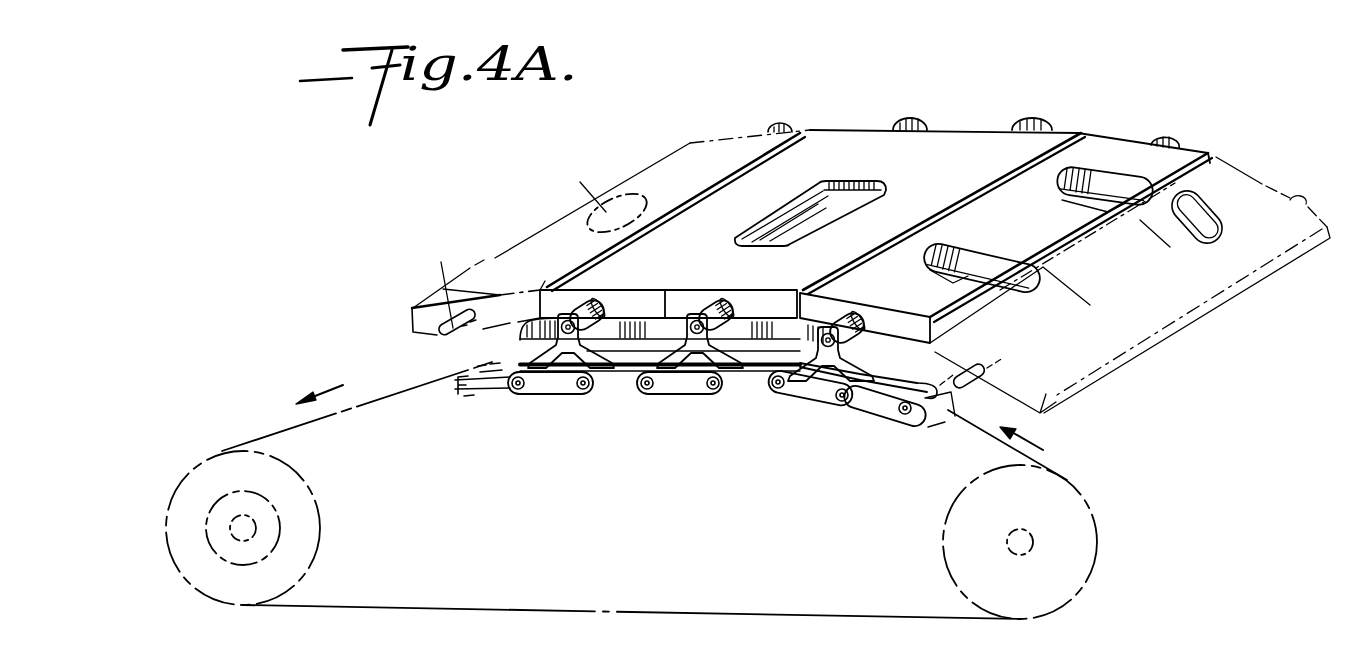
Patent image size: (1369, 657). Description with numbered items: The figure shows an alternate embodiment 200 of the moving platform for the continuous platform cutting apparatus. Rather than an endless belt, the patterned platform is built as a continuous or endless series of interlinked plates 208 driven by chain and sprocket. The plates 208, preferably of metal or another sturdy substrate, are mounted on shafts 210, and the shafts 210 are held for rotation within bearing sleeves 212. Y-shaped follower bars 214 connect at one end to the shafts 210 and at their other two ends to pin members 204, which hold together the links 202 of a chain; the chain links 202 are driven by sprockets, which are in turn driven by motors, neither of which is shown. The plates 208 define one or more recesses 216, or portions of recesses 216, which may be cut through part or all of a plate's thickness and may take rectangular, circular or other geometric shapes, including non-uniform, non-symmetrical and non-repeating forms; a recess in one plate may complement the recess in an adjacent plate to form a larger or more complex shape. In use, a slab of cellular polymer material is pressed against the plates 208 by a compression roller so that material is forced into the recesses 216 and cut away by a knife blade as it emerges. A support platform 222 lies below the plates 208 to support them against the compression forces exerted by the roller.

The alternate embodiment 200 is at (1128, 116).
The plates 208 is at (960, 150).
The recesses 216 is at (843, 213).
The shafts 210 is at (612, 408).
The support platform 222 is at (760, 325).
The bearing sleeves 212 is at (678, 300).
The links 202 is at (768, 392).
The pin members 204 is at (651, 388).
The Y-shaped follower bars 214 is at (748, 376).